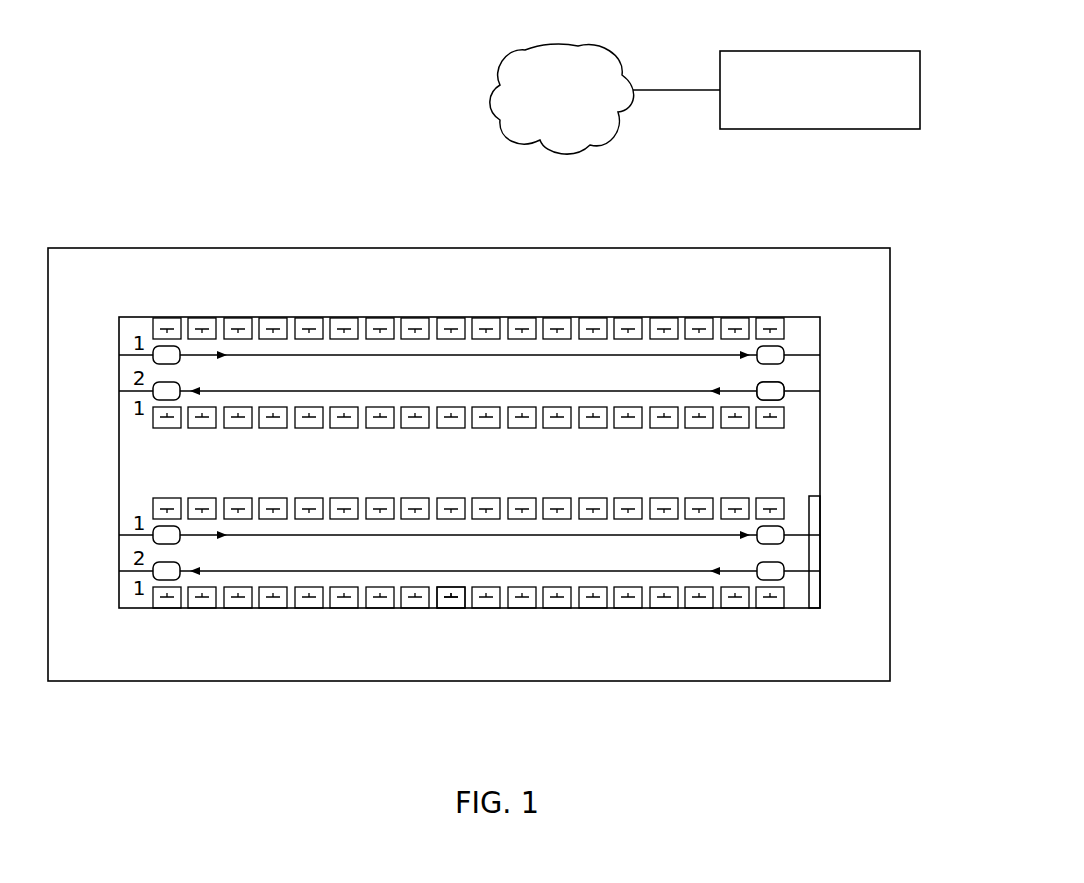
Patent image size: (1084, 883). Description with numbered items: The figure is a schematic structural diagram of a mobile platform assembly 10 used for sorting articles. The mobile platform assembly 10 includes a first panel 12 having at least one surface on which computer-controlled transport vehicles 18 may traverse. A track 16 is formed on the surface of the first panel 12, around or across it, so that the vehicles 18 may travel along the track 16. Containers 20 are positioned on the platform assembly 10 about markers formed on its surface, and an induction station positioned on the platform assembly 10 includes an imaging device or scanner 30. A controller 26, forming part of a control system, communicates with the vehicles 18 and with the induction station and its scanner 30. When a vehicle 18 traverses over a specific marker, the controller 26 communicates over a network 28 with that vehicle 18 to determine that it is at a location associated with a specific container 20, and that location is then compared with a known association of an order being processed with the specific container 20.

The mobile platform assembly 10 is at (468, 317).
The first panel 12 is at (805, 335).
The track 16 is at (360, 573).
The transport vehicle 18 is at (785, 394).
The container 20 is at (455, 603).
The controller 26 is at (776, 90).
The network 28 is at (562, 99).
The imaging device or scanner 30 is at (816, 560).